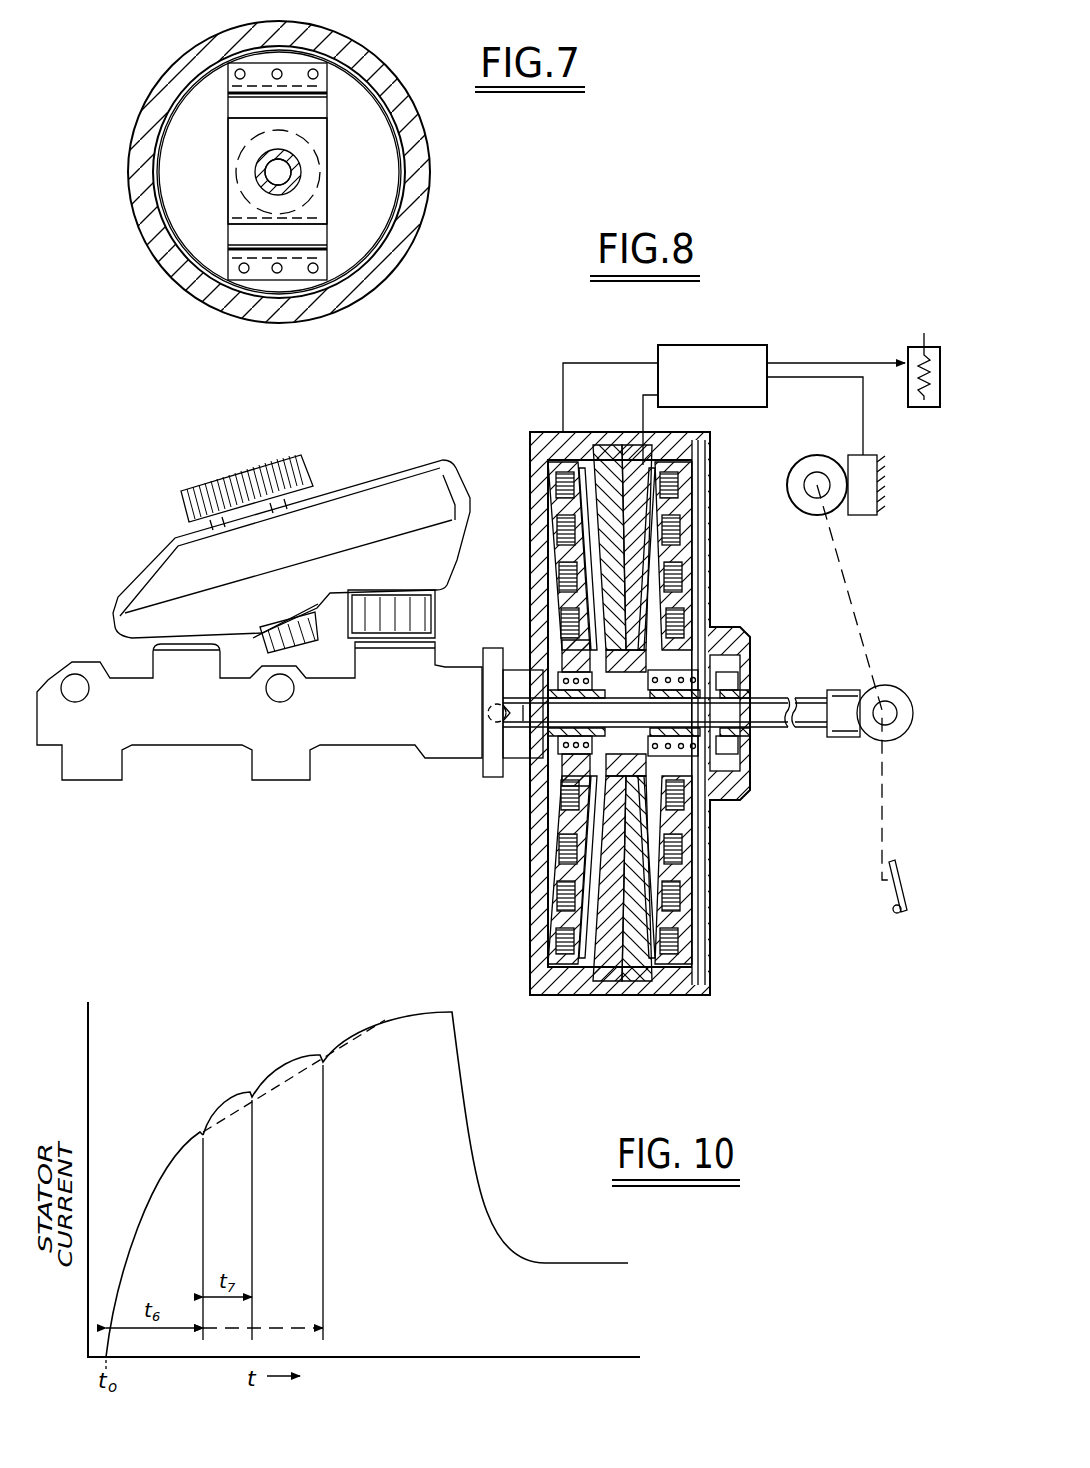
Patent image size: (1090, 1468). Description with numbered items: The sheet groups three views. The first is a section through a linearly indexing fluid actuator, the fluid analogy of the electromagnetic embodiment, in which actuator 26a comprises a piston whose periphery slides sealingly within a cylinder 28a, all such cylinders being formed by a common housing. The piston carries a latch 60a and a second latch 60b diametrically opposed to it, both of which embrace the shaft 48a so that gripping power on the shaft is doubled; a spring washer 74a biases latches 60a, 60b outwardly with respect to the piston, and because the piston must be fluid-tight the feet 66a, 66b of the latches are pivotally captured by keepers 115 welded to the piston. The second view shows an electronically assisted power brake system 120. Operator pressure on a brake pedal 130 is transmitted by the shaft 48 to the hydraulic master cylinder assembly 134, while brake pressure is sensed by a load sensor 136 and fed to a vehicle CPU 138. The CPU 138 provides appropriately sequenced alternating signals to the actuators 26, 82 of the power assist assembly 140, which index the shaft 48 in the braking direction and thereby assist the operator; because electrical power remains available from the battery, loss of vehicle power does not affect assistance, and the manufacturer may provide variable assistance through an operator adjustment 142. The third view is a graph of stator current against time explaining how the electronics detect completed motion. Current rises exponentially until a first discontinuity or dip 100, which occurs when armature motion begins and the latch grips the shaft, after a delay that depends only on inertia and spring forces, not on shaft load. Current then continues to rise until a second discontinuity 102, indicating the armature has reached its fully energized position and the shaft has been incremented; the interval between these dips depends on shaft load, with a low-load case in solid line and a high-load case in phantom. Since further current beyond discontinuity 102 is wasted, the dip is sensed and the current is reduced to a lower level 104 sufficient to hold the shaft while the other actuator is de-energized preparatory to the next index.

In FIG. 7, the actuator 26a is at (388, 50).
In FIG. 7, the cylinder 28a is at (415, 130).
In FIG. 7, the latch 60a is at (240, 208).
In FIG. 7, the second latch 60b is at (237, 105).
In FIG. 7, the foot 66a is at (332, 243).
In FIG. 7, the foot 66b is at (328, 96).
In FIG. 7, the keepers 115 is at (232, 78).
In FIG. 7, the shaft 48a is at (295, 167).
In FIG. 7, the spring washer 74a is at (312, 187).
In FIG. 8, the electronically assisted power brake system 120 is at (493, 366).
In FIG. 8, the hydraulic master cylinder assembly 134 is at (385, 468).
In FIG. 8, the actuator 26 is at (552, 450).
In FIG. 8, the actuator 82 is at (628, 452).
In FIG. 8, the power assist assembly 140 is at (528, 866).
In FIG. 8, the shaft 48 is at (798, 696).
In FIG. 8, the vehicle CPU 138 is at (705, 344).
In FIG. 8, the operator adjustment 142 is at (912, 410).
In FIG. 8, the load sensor 136 is at (795, 508).
In FIG. 8, the brake pedal 130 is at (903, 860).
In FIG. 10, the first discontinuity 100 is at (200, 1128).
In FIG. 10, the second discontinuity 102 is at (251, 1092).
In FIG. 10, the lower level 104 is at (592, 1263).